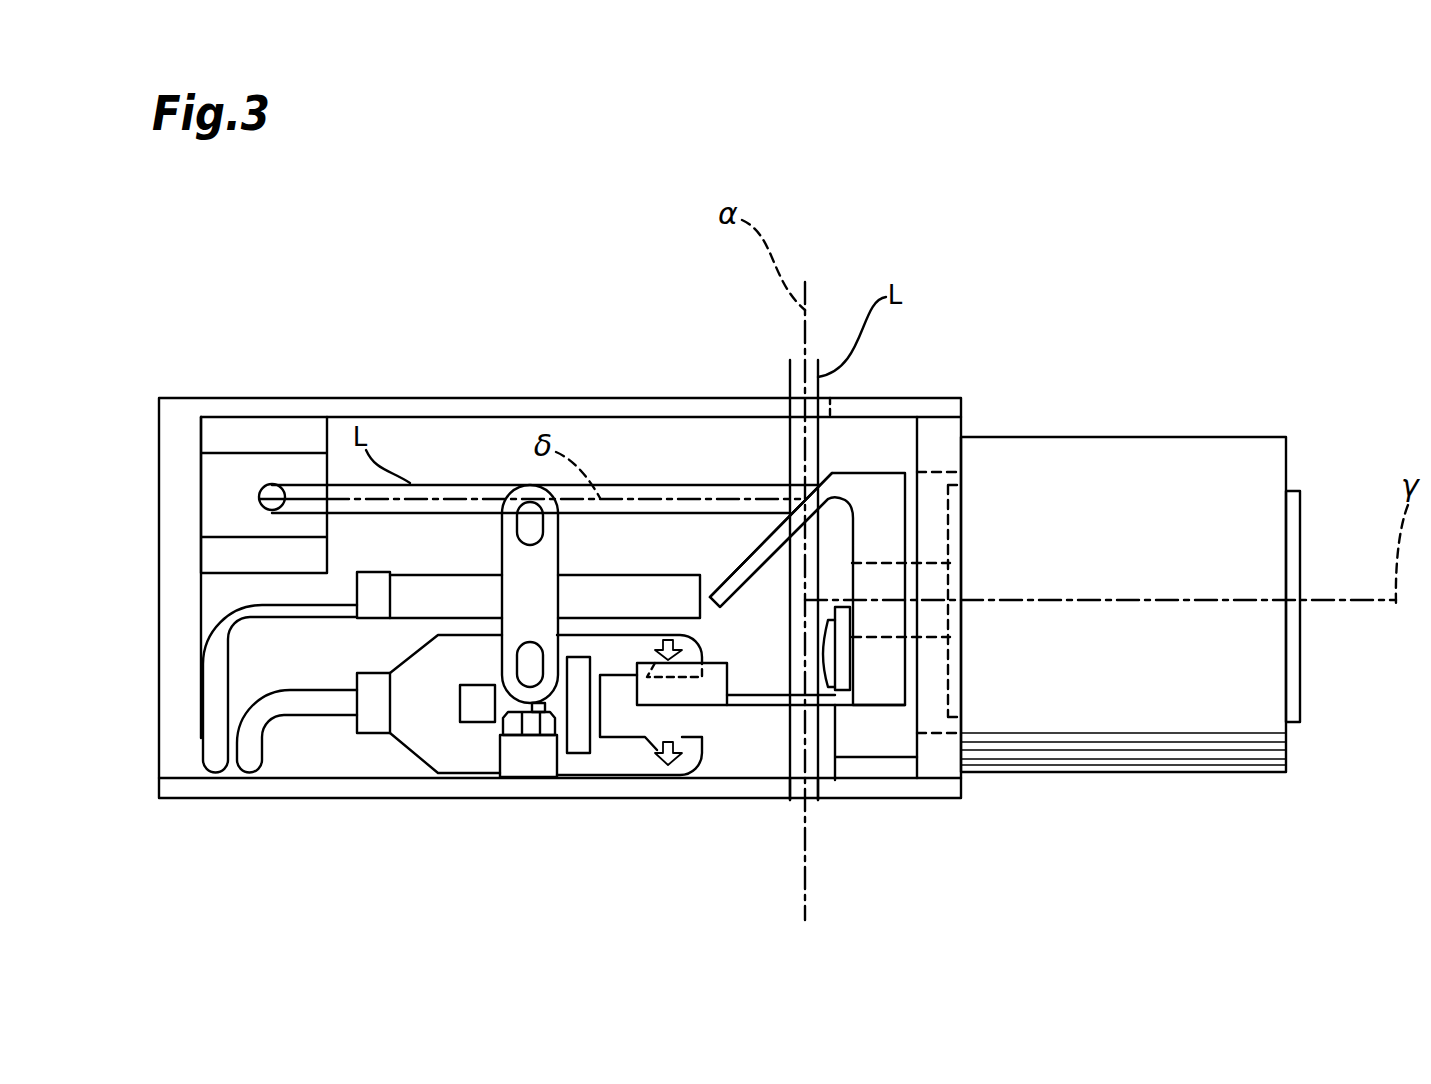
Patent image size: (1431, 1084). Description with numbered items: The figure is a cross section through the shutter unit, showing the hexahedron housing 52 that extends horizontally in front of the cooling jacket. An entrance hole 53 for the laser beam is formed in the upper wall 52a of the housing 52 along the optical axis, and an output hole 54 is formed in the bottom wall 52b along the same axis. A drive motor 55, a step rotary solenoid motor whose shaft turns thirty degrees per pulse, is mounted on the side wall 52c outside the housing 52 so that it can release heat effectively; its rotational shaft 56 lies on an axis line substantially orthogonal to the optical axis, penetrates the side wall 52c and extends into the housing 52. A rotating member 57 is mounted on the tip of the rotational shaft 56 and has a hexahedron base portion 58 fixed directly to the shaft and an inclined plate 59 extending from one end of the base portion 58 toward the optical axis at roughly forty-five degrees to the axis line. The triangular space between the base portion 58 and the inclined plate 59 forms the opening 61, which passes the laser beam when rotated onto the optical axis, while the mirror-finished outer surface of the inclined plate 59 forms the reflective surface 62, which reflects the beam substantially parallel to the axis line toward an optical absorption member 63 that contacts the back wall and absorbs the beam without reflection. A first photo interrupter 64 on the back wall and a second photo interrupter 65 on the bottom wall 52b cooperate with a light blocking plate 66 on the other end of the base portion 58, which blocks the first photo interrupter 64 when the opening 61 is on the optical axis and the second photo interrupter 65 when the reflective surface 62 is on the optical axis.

The housing 52 is at (376, 397).
The upper wall 52a is at (650, 410).
The bottom wall 52b is at (612, 788).
The side wall 52c is at (946, 452).
The entrance hole 53 is at (787, 400).
The output hole 54 is at (784, 785).
The drive motor 55 is at (1240, 457).
The rotational shaft 56 is at (877, 637).
The rotating member 57 is at (868, 473).
The base portion 58 is at (867, 687).
The inclined plate 59 is at (758, 560).
The opening 61 is at (752, 617).
The reflective surface 62 is at (772, 537).
The optical absorption member 63 is at (215, 494).
The first photo interrupter 64 is at (465, 580).
The second photo interrupter 65 is at (423, 740).
The light blocking plate 66 is at (767, 710).